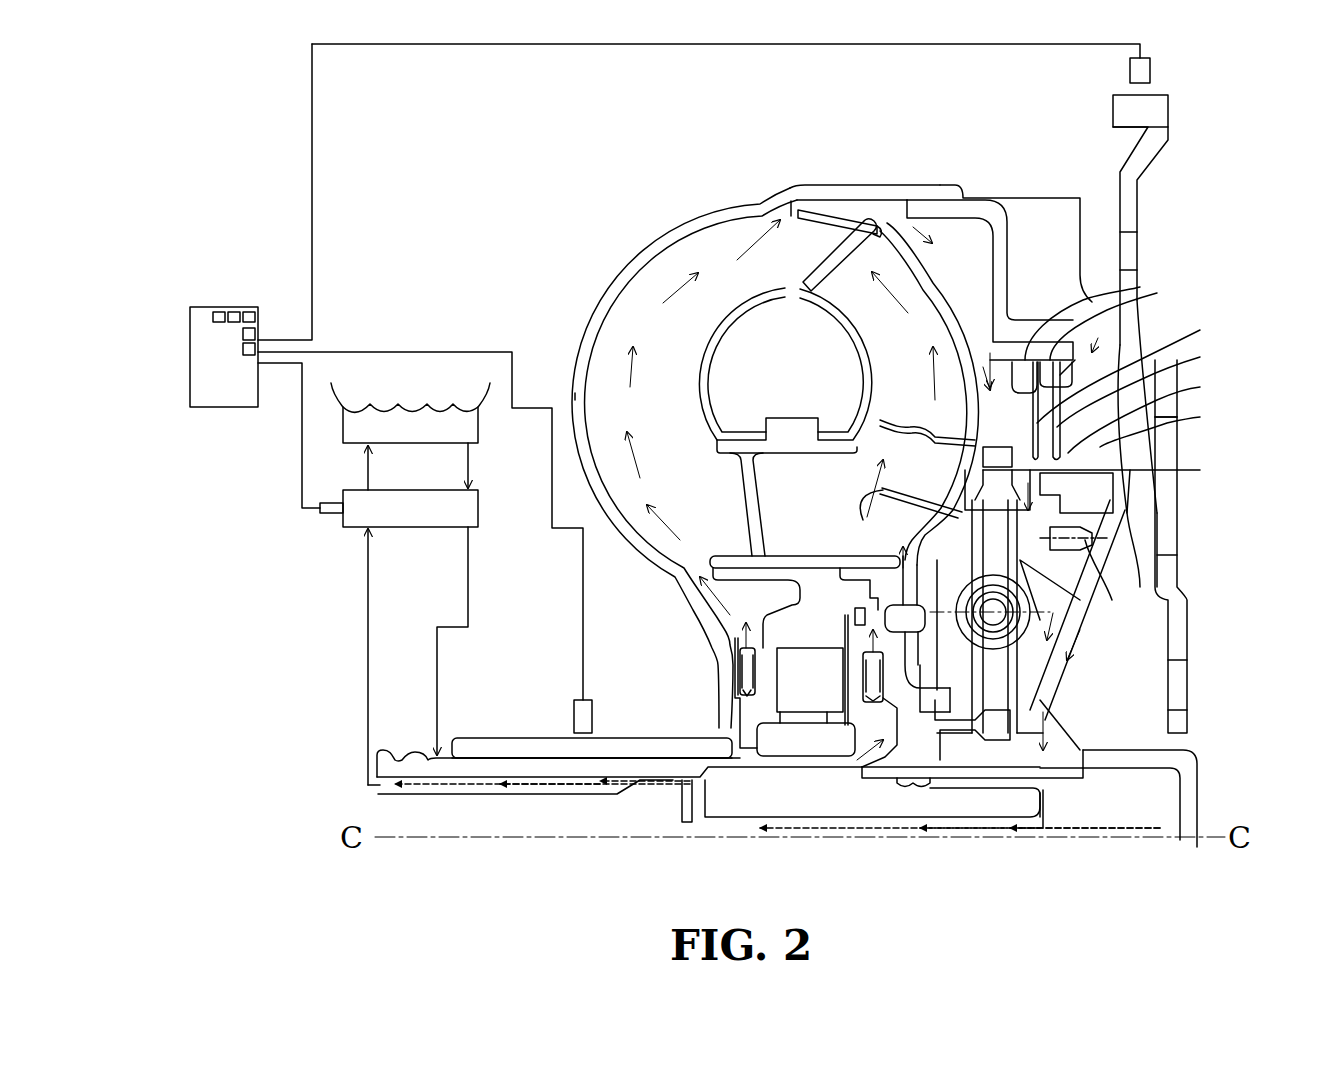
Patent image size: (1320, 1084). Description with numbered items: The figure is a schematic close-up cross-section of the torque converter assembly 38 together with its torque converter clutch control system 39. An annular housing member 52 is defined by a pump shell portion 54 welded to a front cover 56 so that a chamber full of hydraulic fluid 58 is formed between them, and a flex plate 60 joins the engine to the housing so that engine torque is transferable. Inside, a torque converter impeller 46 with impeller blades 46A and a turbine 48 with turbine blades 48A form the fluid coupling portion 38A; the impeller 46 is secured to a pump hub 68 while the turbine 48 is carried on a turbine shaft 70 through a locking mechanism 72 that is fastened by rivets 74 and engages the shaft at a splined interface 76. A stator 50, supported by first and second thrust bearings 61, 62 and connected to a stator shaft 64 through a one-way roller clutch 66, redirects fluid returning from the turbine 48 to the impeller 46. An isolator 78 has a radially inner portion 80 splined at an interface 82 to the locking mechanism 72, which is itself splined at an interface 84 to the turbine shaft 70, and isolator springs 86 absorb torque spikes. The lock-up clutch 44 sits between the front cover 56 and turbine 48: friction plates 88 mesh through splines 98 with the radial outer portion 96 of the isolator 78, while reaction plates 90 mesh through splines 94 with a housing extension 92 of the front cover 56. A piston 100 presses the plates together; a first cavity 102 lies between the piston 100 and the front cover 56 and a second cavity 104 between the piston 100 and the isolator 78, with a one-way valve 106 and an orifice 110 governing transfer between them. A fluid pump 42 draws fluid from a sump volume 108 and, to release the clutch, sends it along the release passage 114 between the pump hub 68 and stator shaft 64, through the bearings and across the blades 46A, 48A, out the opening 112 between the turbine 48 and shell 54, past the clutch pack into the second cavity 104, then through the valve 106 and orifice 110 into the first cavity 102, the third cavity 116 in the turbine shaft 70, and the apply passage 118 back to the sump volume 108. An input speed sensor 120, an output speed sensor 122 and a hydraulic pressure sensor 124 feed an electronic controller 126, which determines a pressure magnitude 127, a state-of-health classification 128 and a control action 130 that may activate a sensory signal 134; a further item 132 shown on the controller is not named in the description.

The torque converter assembly 38 is at (570, 188).
The fluid coupling portion 38A is at (837, 370).
The torque converter clutch control system 39 is at (231, 153).
The fluid pump 42 is at (478, 513).
The lock-up clutch 44 is at (1110, 345).
The torque converter impeller 46 is at (605, 380).
The impeller blades 46A is at (653, 391).
The turbine 48 is at (885, 249).
The turbine blades 48A is at (837, 250).
The stator 50 is at (836, 610).
The annular housing member 52 is at (575, 316).
The pump shell portion 54 is at (680, 232).
The front cover 56 is at (975, 207).
The hydraulic fluid 58 is at (410, 413).
The flex plate 60 is at (1140, 190).
The first thrust bearing 61 is at (733, 660).
The second thrust bearing 62 is at (858, 675).
The stator shaft 64 is at (497, 780).
The one-way roller clutch 66 is at (783, 702).
The pump hub 68 is at (460, 738).
The turbine shaft 70 is at (625, 822).
The locking mechanism 72 is at (972, 762).
The rivets 74 is at (902, 606).
The splined interface 76 is at (981, 792).
The isolator 78 is at (1160, 640).
The radially inner portion 80 is at (1000, 680).
The interface 82 is at (940, 715).
The interface 84 is at (932, 783).
The isolator springs 86 is at (1040, 600).
The friction plates 88 is at (1080, 395).
The reaction plates 90 is at (1090, 300).
The housing extension 92 is at (1090, 340).
The splines 94 is at (1075, 360).
The radial outer portion 96 is at (1085, 425).
The splines 98 is at (1160, 470).
The piston 100 is at (1160, 428).
The first cavity 102 is at (1160, 568).
The second cavity 104 is at (1052, 505).
The one-way valve 106 is at (1110, 582).
The sump volume 108 is at (478, 436).
The orifice 110 is at (1045, 672).
The opening 112 is at (789, 214).
The release passage 114 is at (518, 738).
The third cavity 116 is at (812, 832).
The apply passage 118 is at (400, 782).
The input speed sensor 120 is at (1152, 68).
The rotational output speed sensor 122 is at (574, 718).
The hydraulic pressure sensor 124 is at (330, 515).
The electronic controller 126 is at (224, 357).
The magnitude of the hydraulic pressure 127 is at (215, 310).
The SOH classification 128 is at (233, 310).
The control action 130 is at (250, 310).
The input 132 is at (256, 334).
The sensory signal 134 is at (243, 348).